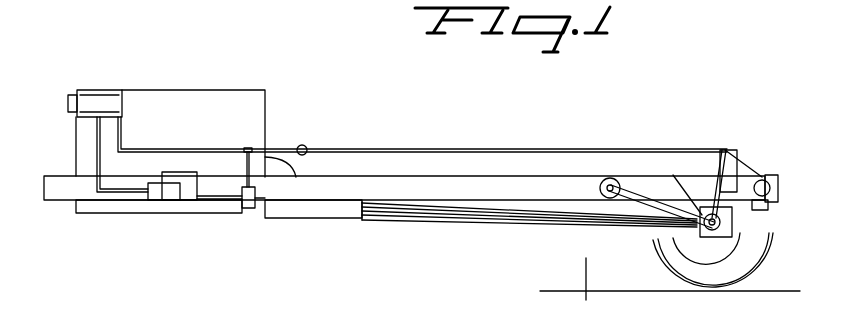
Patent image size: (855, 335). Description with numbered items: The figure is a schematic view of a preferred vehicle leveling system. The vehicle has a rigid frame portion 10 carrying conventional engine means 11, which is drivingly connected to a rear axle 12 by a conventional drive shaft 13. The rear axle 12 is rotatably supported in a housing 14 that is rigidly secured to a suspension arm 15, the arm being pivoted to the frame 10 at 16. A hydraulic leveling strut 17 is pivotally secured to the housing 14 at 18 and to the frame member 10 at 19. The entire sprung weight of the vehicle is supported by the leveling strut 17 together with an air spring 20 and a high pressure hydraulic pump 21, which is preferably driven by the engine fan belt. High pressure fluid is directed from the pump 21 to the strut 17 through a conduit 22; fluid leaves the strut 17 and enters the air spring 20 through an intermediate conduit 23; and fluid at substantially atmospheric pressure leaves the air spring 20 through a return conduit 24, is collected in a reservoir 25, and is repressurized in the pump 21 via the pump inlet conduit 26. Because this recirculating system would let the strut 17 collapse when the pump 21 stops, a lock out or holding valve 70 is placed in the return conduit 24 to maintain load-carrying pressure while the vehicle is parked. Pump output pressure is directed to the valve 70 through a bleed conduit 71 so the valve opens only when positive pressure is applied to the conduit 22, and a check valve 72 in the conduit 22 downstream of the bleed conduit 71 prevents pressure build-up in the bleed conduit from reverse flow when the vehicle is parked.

The rigid frame portion 10 is at (424, 186).
The engine means 11 is at (163, 100).
The rear axle 12 is at (656, 243).
The drive shaft 13 is at (487, 212).
The housing 14 is at (680, 185).
The suspension arm 15 is at (630, 198).
The pivot 16 is at (604, 182).
The hydraulic leveling strut 17 is at (717, 162).
The pivot 18 is at (766, 233).
The pivot 19 is at (726, 150).
The air spring 20 is at (797, 168).
The high pressure hydraulic pump 21 is at (100, 102).
The conduit 22 is at (373, 148).
The intermediate conduit 23 is at (752, 160).
The return conduit 24 is at (760, 208).
The reservoir 25 is at (167, 193).
The pump inlet conduit 26 is at (127, 190).
The holding valve 70 is at (248, 209).
The bleed conduit 71 is at (247, 160).
The check valve 72 is at (300, 146).